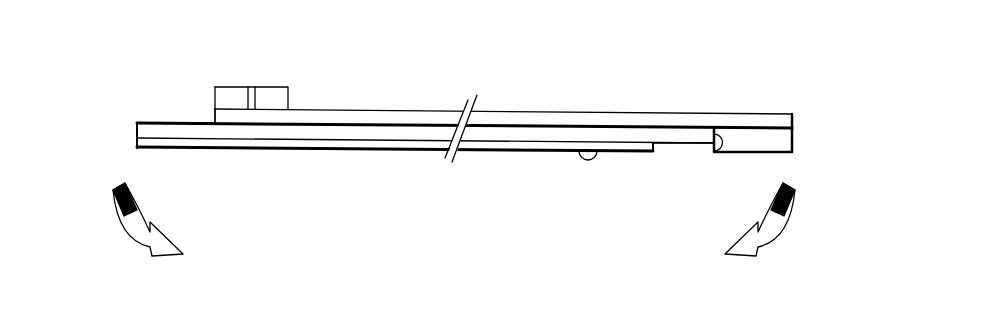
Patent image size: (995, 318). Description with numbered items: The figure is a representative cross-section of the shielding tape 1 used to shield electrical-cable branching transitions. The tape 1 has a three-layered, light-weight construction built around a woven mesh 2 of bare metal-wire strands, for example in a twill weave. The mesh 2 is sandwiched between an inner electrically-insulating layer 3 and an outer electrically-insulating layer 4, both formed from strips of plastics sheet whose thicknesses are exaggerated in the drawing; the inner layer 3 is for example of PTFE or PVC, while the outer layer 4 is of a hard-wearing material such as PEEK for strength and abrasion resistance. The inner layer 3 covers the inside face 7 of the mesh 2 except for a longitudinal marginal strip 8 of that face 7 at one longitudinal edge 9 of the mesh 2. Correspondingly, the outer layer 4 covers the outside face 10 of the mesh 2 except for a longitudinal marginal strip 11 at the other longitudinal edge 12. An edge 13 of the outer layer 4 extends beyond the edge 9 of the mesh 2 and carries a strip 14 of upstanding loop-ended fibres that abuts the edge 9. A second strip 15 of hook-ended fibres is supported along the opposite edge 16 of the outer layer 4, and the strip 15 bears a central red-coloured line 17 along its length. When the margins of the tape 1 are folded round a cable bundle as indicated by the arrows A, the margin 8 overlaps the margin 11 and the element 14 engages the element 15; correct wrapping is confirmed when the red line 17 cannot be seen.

The shielding tape 1 is at (687, 80).
The woven mesh 2 is at (515, 143).
The inner electrically-insulating layer 3 is at (393, 150).
The outer electrically-insulating layer 4 is at (414, 114).
The inside face 7 is at (598, 153).
The longitudinal marginal strip 8 is at (675, 147).
The longitudinal edge 9 is at (723, 153).
The outside face 10 is at (334, 131).
The longitudinal marginal strip 11 is at (152, 122).
The longitudinal edge 12 is at (135, 135).
The edge of outer layer 13 is at (793, 122).
The strip of upstanding fibres 14 is at (768, 145).
The second strip of upstanding fibres 15 is at (277, 97).
The opposite edge of outer layer 16 is at (214, 116).
The red-coloured line 17 is at (249, 87).